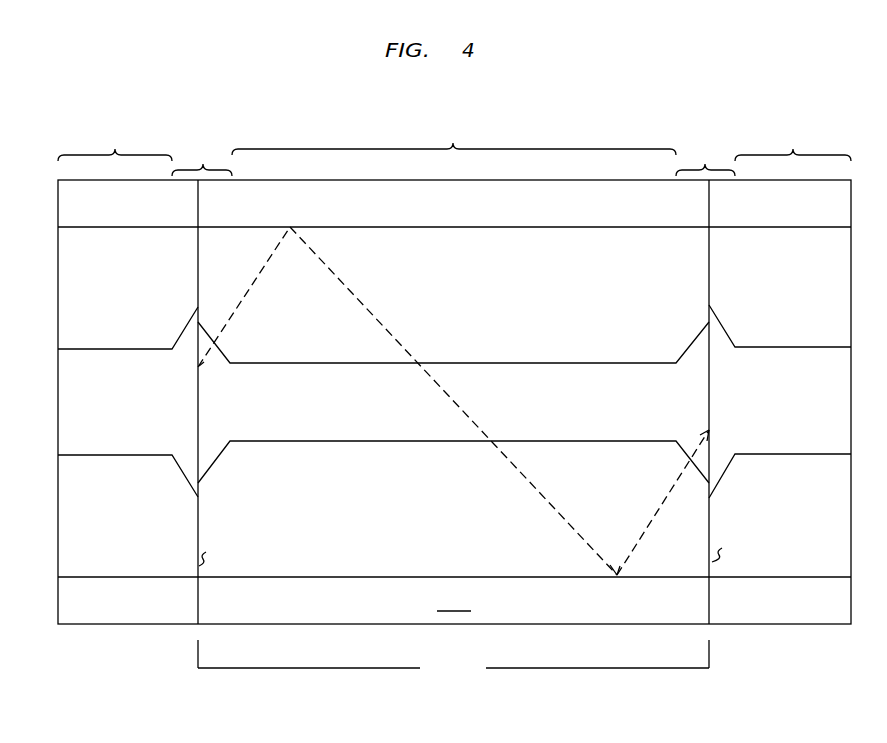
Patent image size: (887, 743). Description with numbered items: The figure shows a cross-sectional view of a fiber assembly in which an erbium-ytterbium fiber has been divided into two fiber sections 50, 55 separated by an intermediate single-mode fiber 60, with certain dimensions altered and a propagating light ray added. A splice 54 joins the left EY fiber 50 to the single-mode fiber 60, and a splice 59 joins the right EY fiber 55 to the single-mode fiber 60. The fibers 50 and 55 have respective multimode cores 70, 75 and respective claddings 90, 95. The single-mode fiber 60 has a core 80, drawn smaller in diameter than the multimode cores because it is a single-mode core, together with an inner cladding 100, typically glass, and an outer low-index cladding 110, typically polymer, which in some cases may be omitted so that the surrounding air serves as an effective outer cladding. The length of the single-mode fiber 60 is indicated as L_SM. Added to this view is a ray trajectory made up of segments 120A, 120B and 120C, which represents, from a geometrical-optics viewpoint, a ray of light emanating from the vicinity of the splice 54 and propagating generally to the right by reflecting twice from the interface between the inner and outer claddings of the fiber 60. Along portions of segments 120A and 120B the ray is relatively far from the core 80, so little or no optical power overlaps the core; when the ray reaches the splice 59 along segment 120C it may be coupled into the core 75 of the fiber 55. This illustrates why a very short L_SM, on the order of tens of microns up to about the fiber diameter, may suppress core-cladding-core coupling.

The EY fiber section 50 is at (115, 136).
The splice 54 is at (224, 375).
The single-mode fiber 60 is at (453, 395).
The splice 59 is at (731, 373).
The EY fiber section 55 is at (793, 136).
The core 70 is at (130, 348).
The core 75 is at (788, 347).
The core 80 is at (617, 412).
The cladding 90 is at (138, 521).
The cladding 95 is at (801, 521).
The cladding 100 is at (443, 391).
The low-index cladding 110 is at (454, 405).
The trajectory segment 120A is at (255, 288).
The trajectory segment 120B is at (500, 455).
The trajectory segment 120C is at (648, 523).